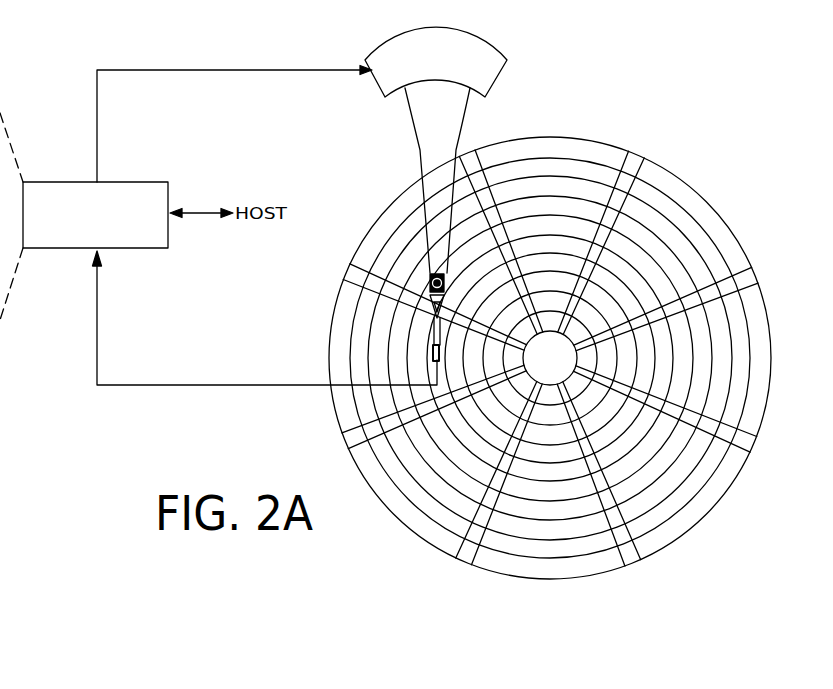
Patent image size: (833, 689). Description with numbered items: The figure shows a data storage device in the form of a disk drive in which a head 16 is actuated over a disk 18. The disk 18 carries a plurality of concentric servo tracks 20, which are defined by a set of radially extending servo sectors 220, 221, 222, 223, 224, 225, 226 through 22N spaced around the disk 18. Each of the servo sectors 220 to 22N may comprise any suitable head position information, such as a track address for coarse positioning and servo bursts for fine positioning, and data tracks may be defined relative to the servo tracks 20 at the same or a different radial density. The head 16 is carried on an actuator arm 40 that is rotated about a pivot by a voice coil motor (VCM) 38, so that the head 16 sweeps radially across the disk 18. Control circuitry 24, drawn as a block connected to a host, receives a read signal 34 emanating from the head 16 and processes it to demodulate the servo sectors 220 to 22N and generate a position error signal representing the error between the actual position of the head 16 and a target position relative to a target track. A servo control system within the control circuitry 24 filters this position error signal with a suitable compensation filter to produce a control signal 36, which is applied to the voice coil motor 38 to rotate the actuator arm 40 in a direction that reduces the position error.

The head 16 is at (419, 346).
The disk 18 is at (710, 179).
The servo tracks 20 is at (548, 162).
The servo sector 220 is at (637, 160).
The servo sector 221 is at (746, 279).
The servo sector 222 is at (748, 444).
The servo sector 223 is at (630, 556).
The servo sector 224 is at (466, 553).
The servo sector 225 is at (352, 441).
The servo sector 226 is at (354, 263).
The servo sector 22N is at (464, 162).
The control circuitry 24 is at (150, 250).
The read signal 34 is at (232, 385).
The control signal 36 is at (97, 122).
The voice coil motor (VCM) 38 is at (376, 54).
The actuator arm 40 is at (419, 166).